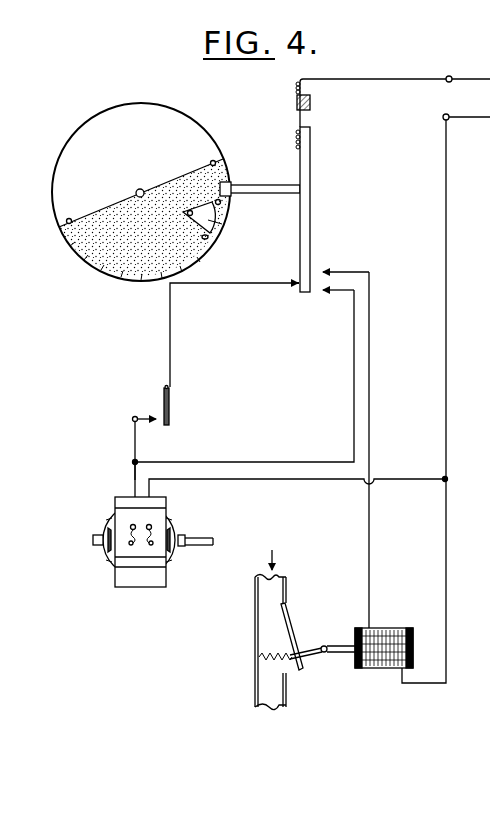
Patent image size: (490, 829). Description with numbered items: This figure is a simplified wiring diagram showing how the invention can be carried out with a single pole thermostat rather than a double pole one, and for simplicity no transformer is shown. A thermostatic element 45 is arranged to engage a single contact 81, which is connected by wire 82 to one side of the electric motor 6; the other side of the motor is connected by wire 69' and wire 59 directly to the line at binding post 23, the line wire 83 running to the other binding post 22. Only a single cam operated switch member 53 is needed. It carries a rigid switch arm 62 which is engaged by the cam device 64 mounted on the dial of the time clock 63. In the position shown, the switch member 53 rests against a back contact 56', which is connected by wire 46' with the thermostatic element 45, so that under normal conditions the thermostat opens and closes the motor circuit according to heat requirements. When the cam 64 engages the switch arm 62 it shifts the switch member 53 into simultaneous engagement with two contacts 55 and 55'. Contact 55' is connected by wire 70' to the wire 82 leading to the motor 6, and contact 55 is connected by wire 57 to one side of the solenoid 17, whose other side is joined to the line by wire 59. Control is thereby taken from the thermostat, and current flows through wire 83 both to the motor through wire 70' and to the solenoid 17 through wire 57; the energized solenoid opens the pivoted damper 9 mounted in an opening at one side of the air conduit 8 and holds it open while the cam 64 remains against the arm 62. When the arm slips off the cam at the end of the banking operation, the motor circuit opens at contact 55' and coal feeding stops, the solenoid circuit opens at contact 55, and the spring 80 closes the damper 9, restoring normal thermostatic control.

The time clock 63 is at (196, 134).
The cam device 64 is at (222, 226).
The switch arm 62 is at (270, 184).
The switch member 53 is at (313, 168).
The wire 83 is at (387, 76).
The binding post 22 is at (452, 76).
The binding post 23 is at (449, 119).
The wire 59 is at (445, 530).
The wire 46' is at (234, 335).
The back contact 56' is at (287, 262).
The contact 55 is at (346, 251).
The wire 57 is at (370, 434).
The contact 55' is at (328, 311).
The wire 70' is at (244, 377).
The wire 69' is at (297, 503).
The thermostatic element 45 is at (170, 401).
The contact 81 is at (155, 416).
The wire 82 is at (135, 478).
The electric motor 6 is at (115, 562).
The air conduit 8 is at (253, 621).
The pivoted damper 9 is at (295, 631).
The spring 80 is at (268, 657).
The solenoid 17 is at (390, 632).